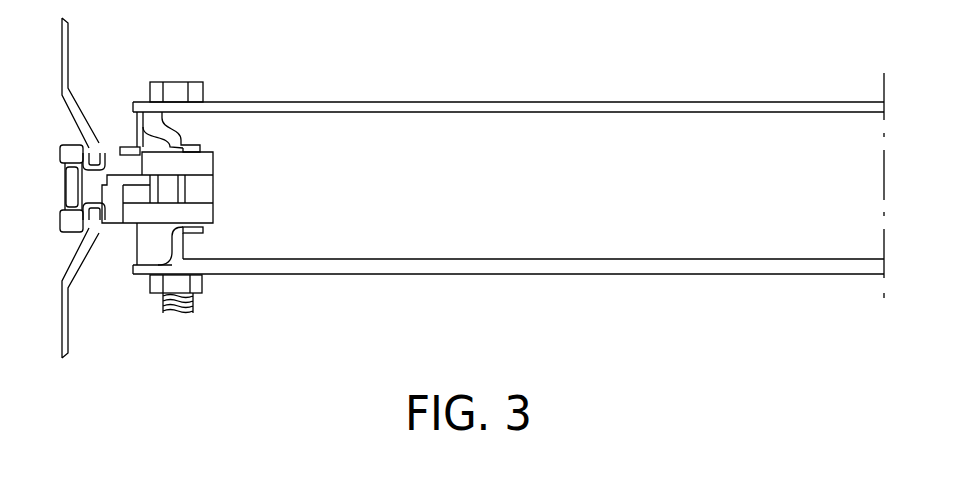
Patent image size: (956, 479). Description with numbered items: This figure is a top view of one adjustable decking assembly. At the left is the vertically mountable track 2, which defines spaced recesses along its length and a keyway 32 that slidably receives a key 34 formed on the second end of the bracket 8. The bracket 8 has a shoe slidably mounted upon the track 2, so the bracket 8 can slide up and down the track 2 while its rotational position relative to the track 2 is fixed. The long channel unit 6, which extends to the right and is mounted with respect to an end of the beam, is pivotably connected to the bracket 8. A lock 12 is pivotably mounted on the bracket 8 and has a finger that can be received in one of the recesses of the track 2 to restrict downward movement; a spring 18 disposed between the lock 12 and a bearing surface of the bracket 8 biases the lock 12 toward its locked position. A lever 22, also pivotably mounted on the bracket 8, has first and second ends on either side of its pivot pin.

The track 2 is at (63, 150).
The channel unit 6 is at (378, 160).
The bracket 8 is at (98, 148).
The lock 12 is at (137, 193).
The spring 18 is at (130, 150).
The lever 22 is at (197, 190).
The keyway 32 is at (80, 238).
The key 34 is at (72, 147).